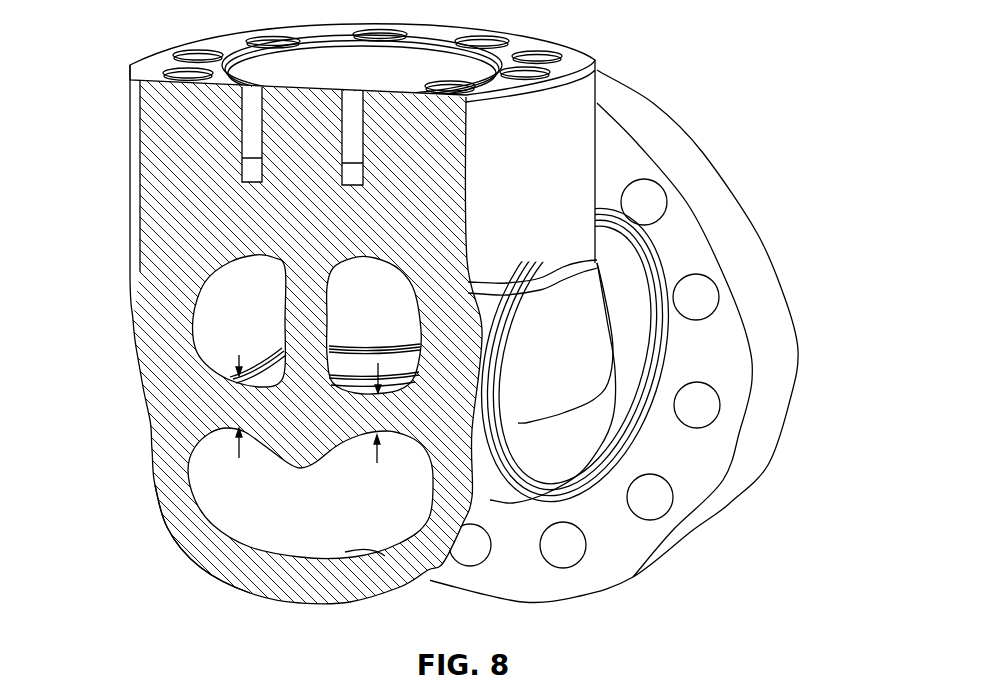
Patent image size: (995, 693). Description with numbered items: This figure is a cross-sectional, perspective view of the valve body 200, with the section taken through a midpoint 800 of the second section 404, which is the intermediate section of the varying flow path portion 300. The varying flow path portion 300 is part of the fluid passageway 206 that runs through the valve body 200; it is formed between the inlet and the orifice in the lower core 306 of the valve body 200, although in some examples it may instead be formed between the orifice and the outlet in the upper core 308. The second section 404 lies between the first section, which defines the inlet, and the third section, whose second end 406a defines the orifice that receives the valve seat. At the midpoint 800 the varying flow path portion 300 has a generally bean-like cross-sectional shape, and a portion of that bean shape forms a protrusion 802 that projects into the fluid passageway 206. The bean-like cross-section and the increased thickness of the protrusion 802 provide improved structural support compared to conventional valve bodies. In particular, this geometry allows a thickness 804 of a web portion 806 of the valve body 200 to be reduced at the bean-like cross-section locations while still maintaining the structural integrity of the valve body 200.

The valve body 200 is at (163, 527).
The fluid passageway 206 is at (346, 520).
The varying flow path portion 300 is at (215, 500).
The lower core 306 is at (345, 552).
The upper core 308 is at (367, 293).
The second section 404 is at (205, 571).
The second end 406a is at (378, 337).
The midpoint 800 is at (186, 410).
The protrusion 802 is at (307, 470).
The thickness 804 is at (245, 380).
The web portion 806 is at (271, 470).